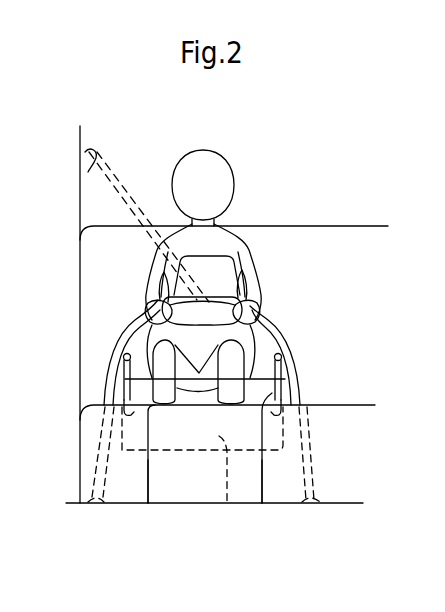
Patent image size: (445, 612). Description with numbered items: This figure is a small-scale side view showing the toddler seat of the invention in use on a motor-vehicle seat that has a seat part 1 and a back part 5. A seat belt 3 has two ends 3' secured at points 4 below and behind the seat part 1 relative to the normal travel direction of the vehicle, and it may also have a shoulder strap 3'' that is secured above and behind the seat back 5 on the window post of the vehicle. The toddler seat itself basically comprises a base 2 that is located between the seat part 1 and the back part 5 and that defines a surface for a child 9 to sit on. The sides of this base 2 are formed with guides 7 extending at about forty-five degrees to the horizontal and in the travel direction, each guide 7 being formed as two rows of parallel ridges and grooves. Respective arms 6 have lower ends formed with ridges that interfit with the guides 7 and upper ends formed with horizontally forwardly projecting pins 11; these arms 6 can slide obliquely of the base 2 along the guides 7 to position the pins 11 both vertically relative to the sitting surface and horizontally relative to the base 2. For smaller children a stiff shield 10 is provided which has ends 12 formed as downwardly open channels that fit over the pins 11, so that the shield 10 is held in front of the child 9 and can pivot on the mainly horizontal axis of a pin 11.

The seat part 1 is at (213, 490).
The base 2 is at (227, 503).
The seat belt 3 is at (238, 298).
The seat belt ends 3' is at (188, 391).
The shoulder strap 3'' is at (147, 225).
The securing points 4 is at (77, 487).
The back part 5 is at (355, 309).
The arms 6 is at (110, 376).
The guides 7 is at (148, 503).
The child 9 is at (210, 249).
The shield 10 is at (213, 263).
The pins 11 is at (125, 335).
The shield ends 12 is at (260, 408).